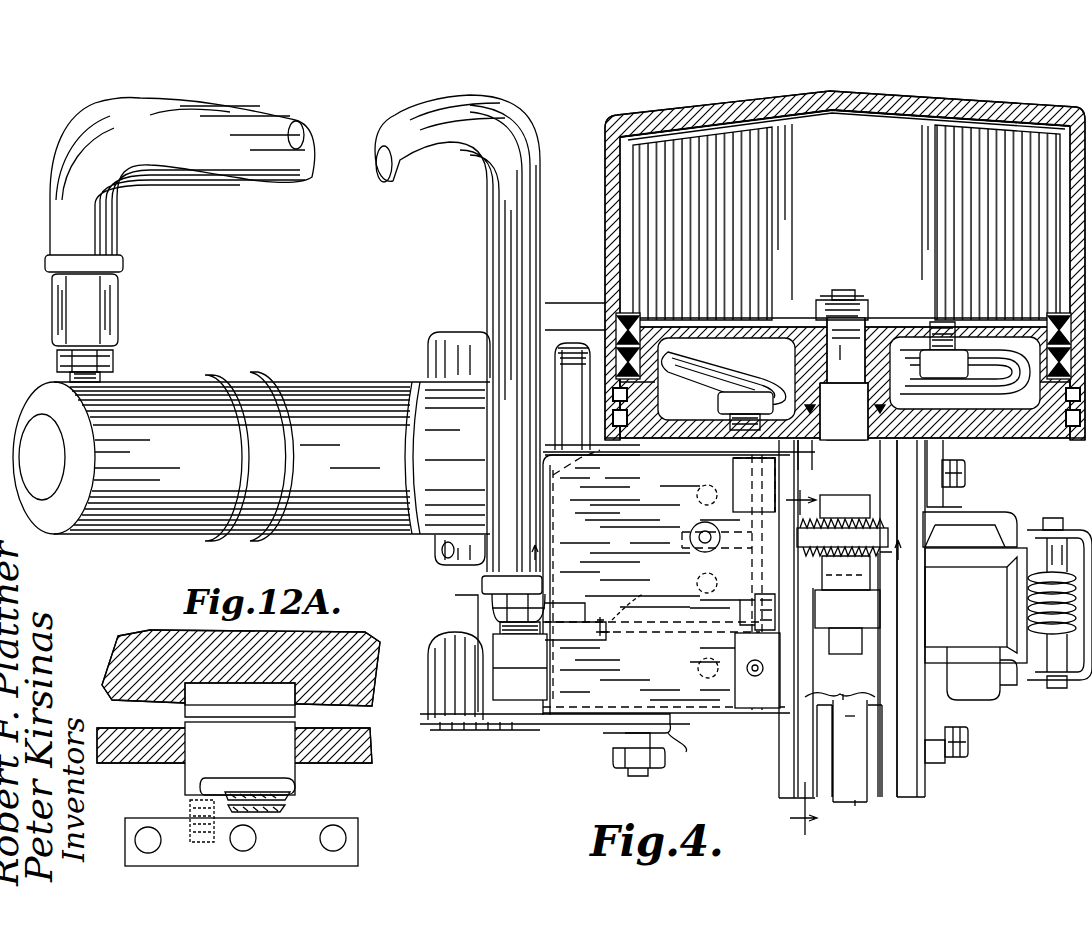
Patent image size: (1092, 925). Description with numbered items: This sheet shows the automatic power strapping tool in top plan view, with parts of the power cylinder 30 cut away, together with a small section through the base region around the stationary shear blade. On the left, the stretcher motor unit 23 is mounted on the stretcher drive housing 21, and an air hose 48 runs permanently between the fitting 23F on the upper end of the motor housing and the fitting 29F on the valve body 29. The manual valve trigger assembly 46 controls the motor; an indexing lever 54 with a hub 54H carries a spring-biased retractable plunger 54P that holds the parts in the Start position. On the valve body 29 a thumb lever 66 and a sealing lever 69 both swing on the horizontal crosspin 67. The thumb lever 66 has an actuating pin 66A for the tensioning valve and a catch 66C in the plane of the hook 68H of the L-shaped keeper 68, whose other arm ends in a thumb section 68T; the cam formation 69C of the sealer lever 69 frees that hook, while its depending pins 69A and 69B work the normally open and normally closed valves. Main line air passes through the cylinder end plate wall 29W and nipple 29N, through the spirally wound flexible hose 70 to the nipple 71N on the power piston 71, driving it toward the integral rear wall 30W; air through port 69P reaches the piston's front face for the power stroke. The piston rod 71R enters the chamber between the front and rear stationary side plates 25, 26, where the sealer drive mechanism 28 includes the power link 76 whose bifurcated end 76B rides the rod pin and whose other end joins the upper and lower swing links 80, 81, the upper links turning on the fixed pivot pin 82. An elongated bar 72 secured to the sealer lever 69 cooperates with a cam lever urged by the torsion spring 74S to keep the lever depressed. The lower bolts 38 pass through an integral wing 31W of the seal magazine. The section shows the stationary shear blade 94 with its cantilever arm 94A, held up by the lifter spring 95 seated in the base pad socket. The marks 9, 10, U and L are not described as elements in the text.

In FIG. 4, the air hose 48 is at (365, 175).
In FIG. 4, the fitting 23F is at (125, 302).
In FIG. 4, the stretcher motor unit 23 is at (158, 545).
In FIG. 4, the stretcher drive housing 21 is at (450, 545).
In FIG. 4, the valve body 29 is at (581, 372).
In FIG. 4, the power cylinder 30 is at (819, 254).
In FIG. 4, the integral rear wall 30W is at (915, 96).
In FIG. 4, the spirally wound flexible hose 70 is at (745, 368).
In FIG. 4, the port 69P is at (698, 428).
In FIG. 4, the power piston 71 is at (960, 342).
In FIG. 4, the nipple 71N is at (960, 374).
In FIG. 4, the piston rod 71R is at (858, 421).
In FIG. 4, the nipple 29N is at (806, 436).
In FIG. 4, the cylinder end plate wall 29W is at (1008, 430).
In FIG. 4, the sealing lever 69 is at (666, 582).
In FIG. 4, the depending pin 69B is at (703, 500).
In FIG. 4, the horizontal crosspin 67 is at (758, 572).
In FIG. 4, the depending pin 69A is at (700, 584).
In FIG. 4, the cam formation 69C is at (638, 601).
In FIG. 4, the thumb lever 66 is at (666, 670).
In FIG. 4, the actuating pin 66A is at (700, 672).
In FIG. 4, the catch 66C is at (612, 634).
In FIG. 4, the thumb section 68T is at (452, 592).
In FIG. 4, the L-shaped keeper 68 is at (501, 606).
In FIG. 4, the fitting 29F is at (500, 640).
In FIG. 4, the hook 68H is at (575, 642).
In FIG. 4, the section line 9 is at (710, 572).
In FIG. 4, the indexing lever 54 is at (440, 702).
In FIG. 4, the manual valve trigger assembly 46 is at (542, 712).
In FIG. 4, the retractable plunger 54P is at (628, 745).
In FIG. 4, the hub 54H is at (686, 745).
In FIG. 4, the front stationary side plate 25 is at (785, 772).
In FIG. 4, the section line 10 is at (807, 662).
In FIG. 4, the torsion spring 74S is at (845, 506).
In FIG. 4, the elongated bar 72 is at (842, 554).
In FIG. 4, the fixed pivot pin 82 is at (860, 616).
In FIG. 4, the upper swing links 80 is at (840, 686).
In FIG. 4, the power link 76 is at (858, 746).
In FIG. 4, the lower swing links 81 is at (818, 765).
In FIG. 4, the sealer drive mechanism 28 is at (857, 805).
In FIG. 4, the rear stationary side plate 26 is at (905, 790).
In FIG. 4, the integral wing 31W is at (935, 462).
In FIG. 4, the lower bolts 38 is at (966, 478).
In FIG. 4, the bifurcated end 76B is at (908, 645).
In FIG. 12A, the stationary shear blade 94 is at (258, 759).
In FIG. 12A, the tongue U is at (280, 786).
In FIG. 12A, the cantilever arm 94A is at (290, 800).
In FIG. 12A, the lifter spring 95 is at (188, 818).
In FIG. 12A, the bar L is at (270, 822).